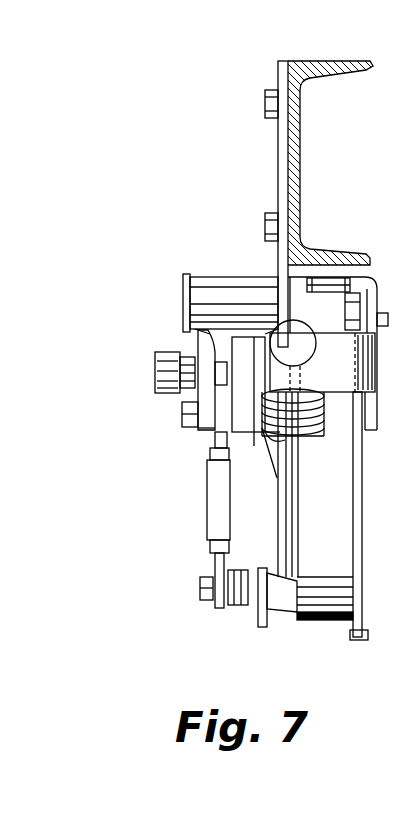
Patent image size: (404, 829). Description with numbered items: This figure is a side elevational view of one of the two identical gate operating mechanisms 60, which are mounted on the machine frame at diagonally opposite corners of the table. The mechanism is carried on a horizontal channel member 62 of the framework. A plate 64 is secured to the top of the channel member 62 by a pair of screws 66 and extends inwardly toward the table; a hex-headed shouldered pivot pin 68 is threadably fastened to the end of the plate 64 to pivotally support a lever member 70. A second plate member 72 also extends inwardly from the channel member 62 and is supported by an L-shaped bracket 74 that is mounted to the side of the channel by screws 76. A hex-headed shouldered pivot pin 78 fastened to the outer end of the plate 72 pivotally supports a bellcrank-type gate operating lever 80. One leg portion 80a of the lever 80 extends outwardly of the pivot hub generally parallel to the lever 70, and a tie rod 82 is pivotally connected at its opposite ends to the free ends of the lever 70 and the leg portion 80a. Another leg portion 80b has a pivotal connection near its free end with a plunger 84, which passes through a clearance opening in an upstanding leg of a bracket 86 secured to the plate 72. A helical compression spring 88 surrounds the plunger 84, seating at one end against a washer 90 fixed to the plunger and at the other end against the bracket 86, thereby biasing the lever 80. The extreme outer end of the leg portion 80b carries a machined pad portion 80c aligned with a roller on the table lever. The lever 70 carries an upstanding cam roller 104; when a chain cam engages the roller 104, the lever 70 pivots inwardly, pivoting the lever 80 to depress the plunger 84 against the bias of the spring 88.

The gate operating mechanism 60 is at (210, 186).
The horizontal channel member 62 is at (339, 61).
The plate 64 is at (278, 153).
The screws 66 is at (264, 100).
The hex-headed shouldered pivot pin 68 is at (183, 296).
The lever member 70 is at (198, 334).
The second plate member 72 is at (361, 638).
The L-shaped bracket 74 is at (372, 280).
The screws 76 is at (316, 278).
The hex-headed shouldered pivot pin 78 is at (262, 628).
The gate operating lever 80 is at (278, 531).
The leg portion 80a is at (257, 611).
The leg portion 80b is at (258, 464).
The machined pad portion 80c is at (251, 440).
The tie rod 82 is at (207, 498).
The plunger 84 is at (318, 348).
The bracket 86 is at (375, 433).
The helical compression spring 88 is at (320, 428).
The washer 90 is at (296, 463).
The cam roller 104 is at (155, 376).